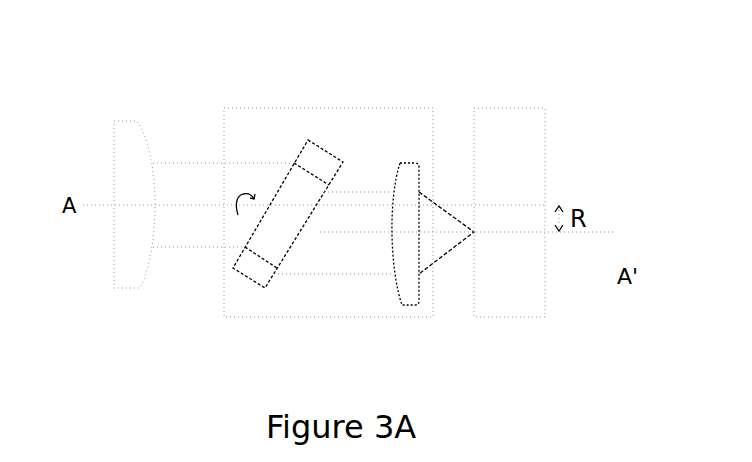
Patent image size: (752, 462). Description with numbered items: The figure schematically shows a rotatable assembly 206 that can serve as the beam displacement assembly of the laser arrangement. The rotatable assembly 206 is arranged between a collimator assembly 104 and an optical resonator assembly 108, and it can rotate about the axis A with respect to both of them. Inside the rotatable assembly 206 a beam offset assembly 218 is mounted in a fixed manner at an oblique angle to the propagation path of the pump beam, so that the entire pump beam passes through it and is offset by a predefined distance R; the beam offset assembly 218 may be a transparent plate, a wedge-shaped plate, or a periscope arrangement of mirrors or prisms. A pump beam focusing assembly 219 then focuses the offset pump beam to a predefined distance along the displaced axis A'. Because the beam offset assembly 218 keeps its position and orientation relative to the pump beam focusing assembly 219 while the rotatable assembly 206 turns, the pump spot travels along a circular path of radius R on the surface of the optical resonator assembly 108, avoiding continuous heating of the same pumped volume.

The collimator assembly 104 is at (120, 128).
The rotatable assembly 206 is at (225, 300).
The beam offset assembly 218 is at (307, 140).
The pump beam focusing assembly 219 is at (403, 302).
The optical resonator assembly 108 is at (488, 113).